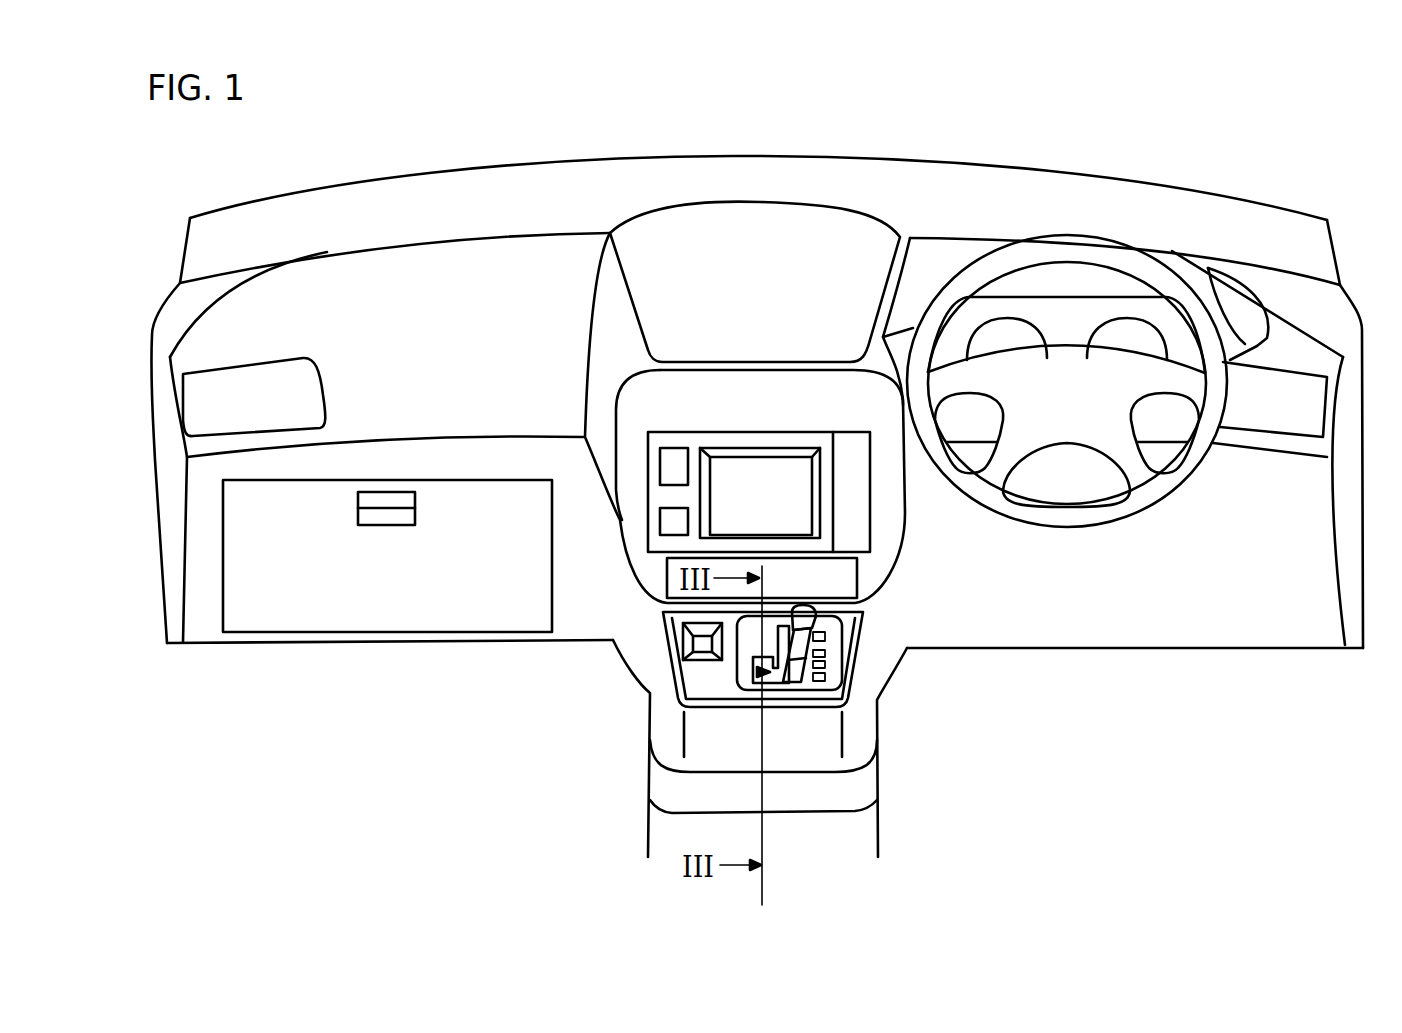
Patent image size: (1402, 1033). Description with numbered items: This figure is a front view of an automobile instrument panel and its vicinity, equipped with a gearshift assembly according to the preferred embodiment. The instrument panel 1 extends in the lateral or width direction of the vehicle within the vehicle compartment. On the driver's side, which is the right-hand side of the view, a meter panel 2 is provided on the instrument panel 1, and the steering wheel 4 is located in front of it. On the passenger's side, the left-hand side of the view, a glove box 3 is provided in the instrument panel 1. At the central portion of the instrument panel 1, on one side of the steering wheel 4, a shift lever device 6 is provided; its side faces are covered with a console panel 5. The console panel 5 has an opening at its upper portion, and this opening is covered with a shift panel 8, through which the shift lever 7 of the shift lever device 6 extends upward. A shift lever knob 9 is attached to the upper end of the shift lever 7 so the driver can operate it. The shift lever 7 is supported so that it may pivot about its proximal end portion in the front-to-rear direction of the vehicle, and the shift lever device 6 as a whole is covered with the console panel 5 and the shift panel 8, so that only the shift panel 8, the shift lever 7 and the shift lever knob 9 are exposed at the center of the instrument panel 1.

The instrument panel 1 is at (860, 228).
The meter panel 2 is at (1083, 322).
The glove box 3 is at (471, 510).
The steering wheel 4 is at (1088, 517).
The console panel 5 is at (830, 755).
The shift lever device 6 is at (743, 668).
The shift lever 7 is at (837, 673).
The shift panel 8 is at (747, 640).
The shift lever knob 9 is at (808, 620).